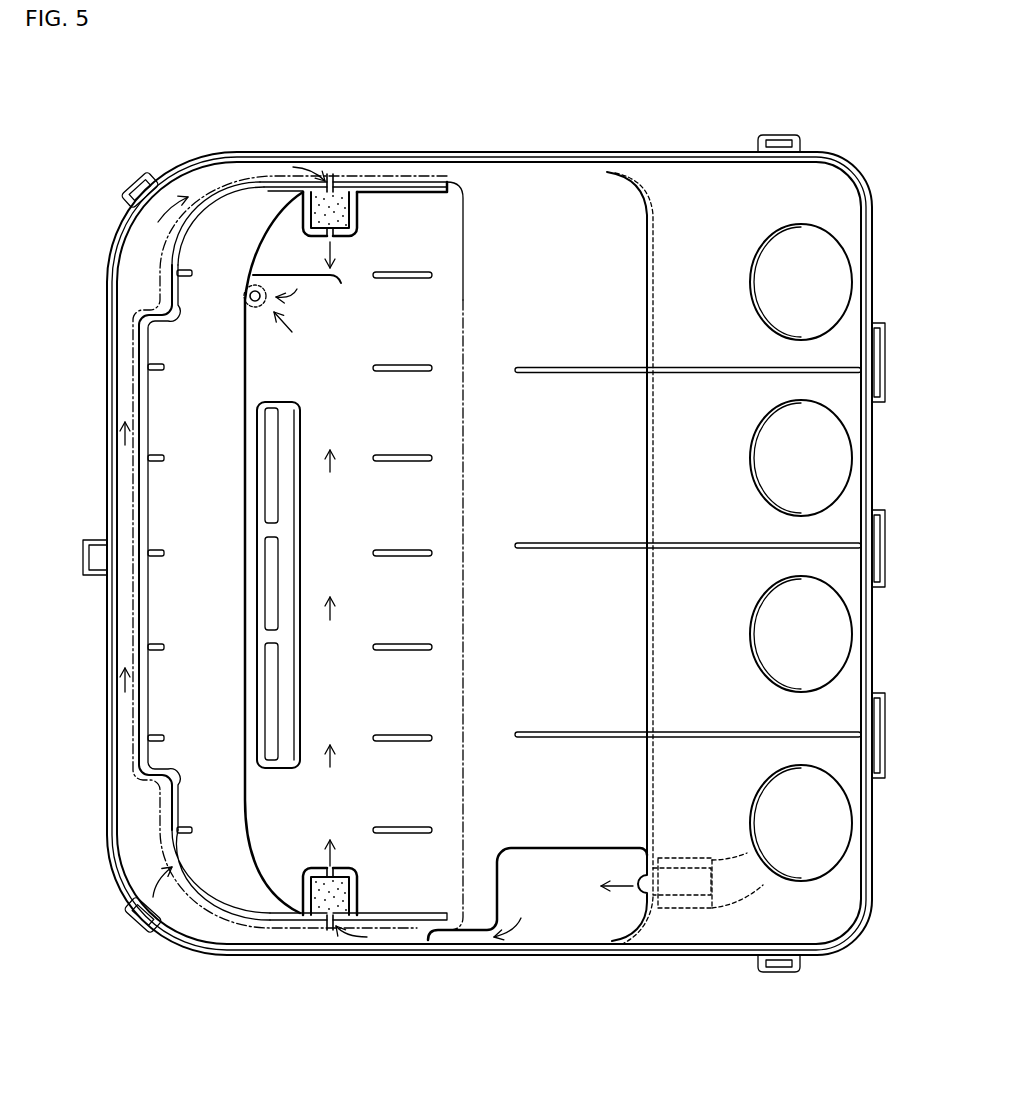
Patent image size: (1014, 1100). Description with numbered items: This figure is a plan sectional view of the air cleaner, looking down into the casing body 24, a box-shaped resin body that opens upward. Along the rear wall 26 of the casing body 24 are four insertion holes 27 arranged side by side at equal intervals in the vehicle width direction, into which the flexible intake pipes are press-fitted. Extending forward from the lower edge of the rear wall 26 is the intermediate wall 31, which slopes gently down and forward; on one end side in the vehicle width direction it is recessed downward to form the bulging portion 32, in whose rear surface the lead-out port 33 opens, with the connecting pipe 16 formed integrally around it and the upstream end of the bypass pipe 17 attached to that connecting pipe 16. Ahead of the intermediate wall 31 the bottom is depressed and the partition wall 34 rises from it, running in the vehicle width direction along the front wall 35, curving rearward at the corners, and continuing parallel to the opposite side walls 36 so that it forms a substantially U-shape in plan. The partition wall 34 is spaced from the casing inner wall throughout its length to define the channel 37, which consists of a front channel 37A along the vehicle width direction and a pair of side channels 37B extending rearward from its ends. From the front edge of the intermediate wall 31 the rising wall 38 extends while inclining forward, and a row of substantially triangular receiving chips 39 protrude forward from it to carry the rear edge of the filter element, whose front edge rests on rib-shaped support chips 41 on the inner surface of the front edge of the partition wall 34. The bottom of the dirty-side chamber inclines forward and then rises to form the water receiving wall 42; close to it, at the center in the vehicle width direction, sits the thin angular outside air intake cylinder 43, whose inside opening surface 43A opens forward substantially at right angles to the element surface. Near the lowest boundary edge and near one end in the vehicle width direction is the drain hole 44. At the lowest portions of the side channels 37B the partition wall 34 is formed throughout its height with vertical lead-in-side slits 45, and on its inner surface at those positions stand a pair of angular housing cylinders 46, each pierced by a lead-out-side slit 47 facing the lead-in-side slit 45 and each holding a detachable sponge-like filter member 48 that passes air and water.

The connecting pipe 16 is at (683, 897).
The bypass pipe 17 is at (735, 885).
The casing body 24 is at (541, 146).
The rear wall 26 is at (725, 170).
The insertion hole 27 is at (830, 246).
The intermediate wall 31 is at (604, 183).
The bulging portion 32 is at (620, 925).
The lead-out port 33 is at (646, 888).
The partition wall 34 is at (413, 185).
The front wall 35 is at (128, 640).
The side wall 36 is at (301, 172).
The channel 37 is at (132, 842).
The front channel 37A is at (125, 778).
The side channel 37B is at (366, 172).
The rising wall 38 is at (430, 212).
The receiving chip 39 is at (418, 650).
The support chip 41 is at (160, 458).
The water receiving wall 42 is at (253, 378).
The outside air intake cylinder 43 is at (295, 512).
The opening surface 43A is at (270, 498).
The drain hole 44 is at (253, 289).
The lead-in-side slit 45 is at (332, 172).
The housing cylinder 46 is at (304, 214).
The lead-out-side slit 47 is at (333, 238).
The filter member 48 is at (338, 216).